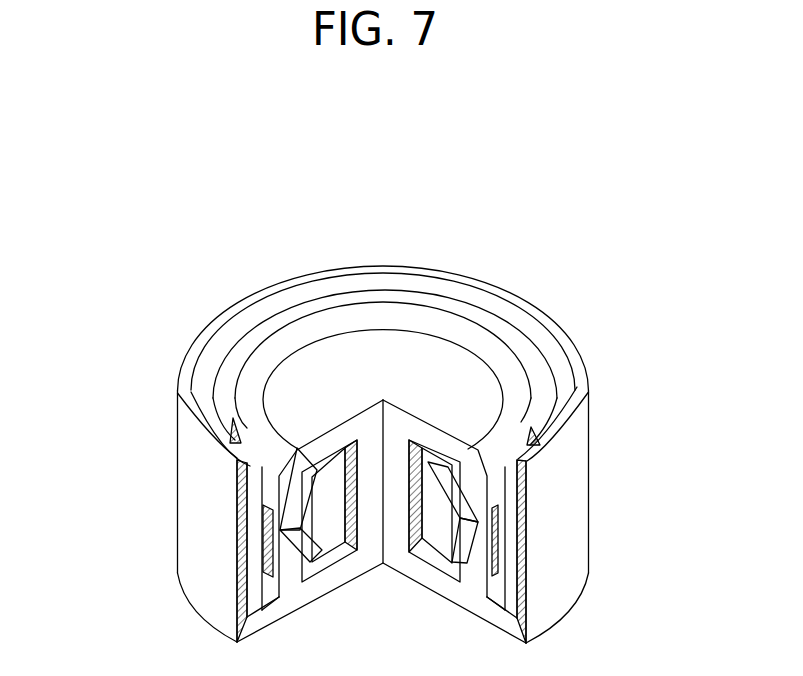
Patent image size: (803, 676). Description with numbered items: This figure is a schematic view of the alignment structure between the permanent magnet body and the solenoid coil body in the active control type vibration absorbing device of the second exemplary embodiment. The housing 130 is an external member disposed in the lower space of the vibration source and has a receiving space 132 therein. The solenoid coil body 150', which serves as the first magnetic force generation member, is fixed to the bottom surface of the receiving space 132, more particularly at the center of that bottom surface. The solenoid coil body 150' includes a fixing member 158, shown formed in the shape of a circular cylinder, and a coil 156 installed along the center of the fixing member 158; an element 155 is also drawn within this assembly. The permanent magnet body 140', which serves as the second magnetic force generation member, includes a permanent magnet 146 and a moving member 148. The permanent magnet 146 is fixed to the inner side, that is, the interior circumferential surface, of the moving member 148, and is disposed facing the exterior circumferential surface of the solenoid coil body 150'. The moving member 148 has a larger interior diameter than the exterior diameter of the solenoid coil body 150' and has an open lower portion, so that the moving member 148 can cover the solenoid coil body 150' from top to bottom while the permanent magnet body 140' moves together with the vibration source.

The housing 130 is at (583, 552).
The receiving space 132 is at (262, 608).
The permanent magnet body 140' is at (468, 380).
The permanent magnet 146 is at (500, 487).
The moving member 148 is at (577, 378).
The solenoid coil body 150' is at (259, 502).
The support strip 155 is at (268, 574).
The coil 156 is at (312, 507).
The fixing member 158 is at (292, 448).